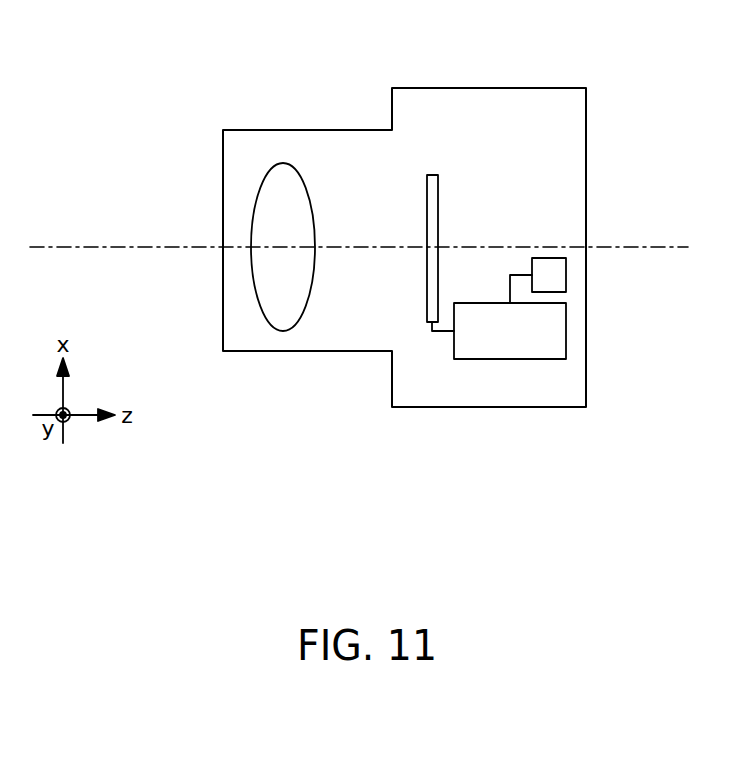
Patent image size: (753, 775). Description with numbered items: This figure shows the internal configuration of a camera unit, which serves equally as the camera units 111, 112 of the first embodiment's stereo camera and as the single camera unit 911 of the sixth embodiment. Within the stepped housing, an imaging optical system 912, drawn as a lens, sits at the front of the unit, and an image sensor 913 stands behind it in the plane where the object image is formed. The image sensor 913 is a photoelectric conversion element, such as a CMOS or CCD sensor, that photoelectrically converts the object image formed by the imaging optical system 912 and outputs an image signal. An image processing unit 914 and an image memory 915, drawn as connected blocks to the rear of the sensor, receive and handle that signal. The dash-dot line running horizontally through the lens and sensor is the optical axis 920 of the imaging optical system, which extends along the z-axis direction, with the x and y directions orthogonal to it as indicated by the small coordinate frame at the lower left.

The camera unit 111 is at (405, 209).
The camera unit 112 is at (405, 209).
The camera unit 911 is at (587, 76).
The imaging optical system 912 is at (260, 312).
The image sensor 913 is at (438, 183).
The image processing unit 914 is at (566, 330).
The image memory 915 is at (566, 270).
The optical axis 920 is at (85, 247).